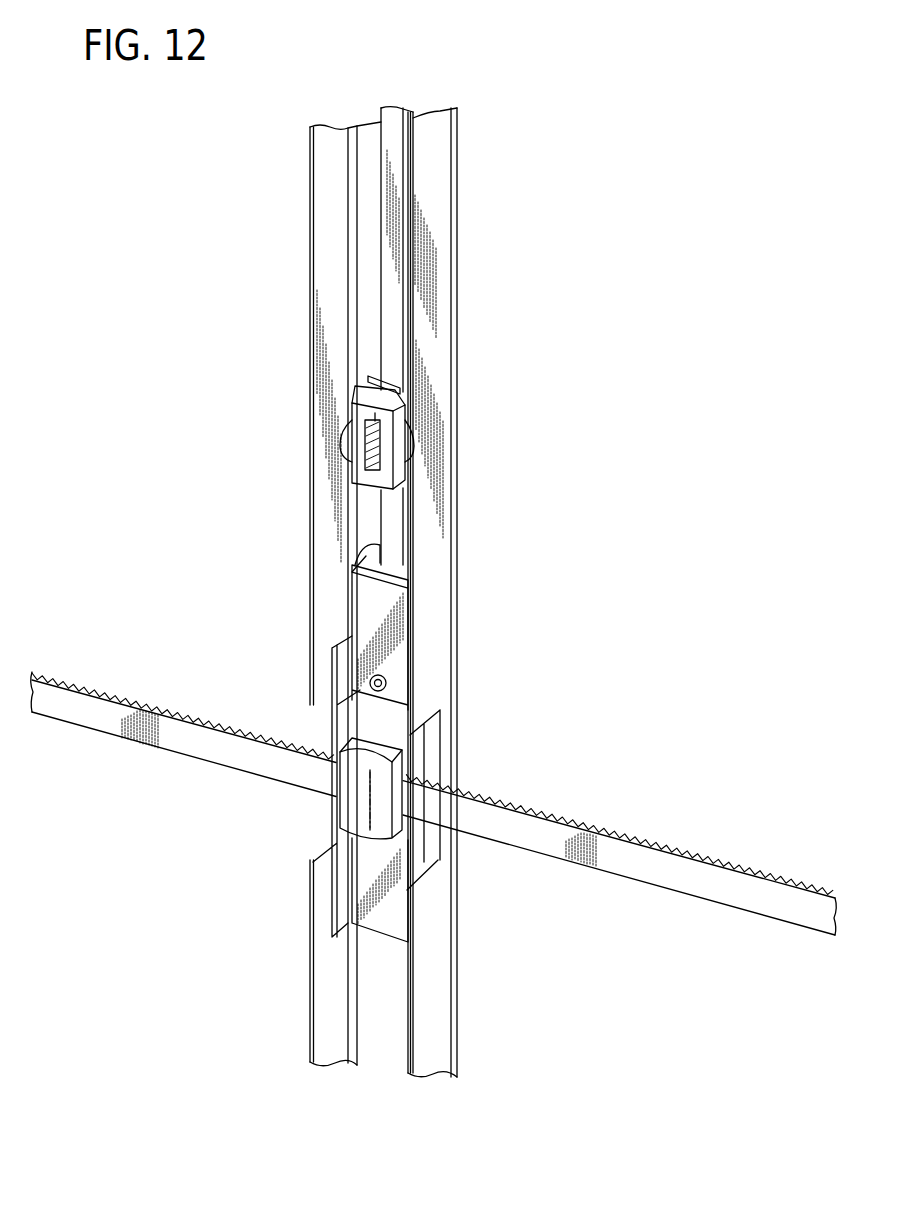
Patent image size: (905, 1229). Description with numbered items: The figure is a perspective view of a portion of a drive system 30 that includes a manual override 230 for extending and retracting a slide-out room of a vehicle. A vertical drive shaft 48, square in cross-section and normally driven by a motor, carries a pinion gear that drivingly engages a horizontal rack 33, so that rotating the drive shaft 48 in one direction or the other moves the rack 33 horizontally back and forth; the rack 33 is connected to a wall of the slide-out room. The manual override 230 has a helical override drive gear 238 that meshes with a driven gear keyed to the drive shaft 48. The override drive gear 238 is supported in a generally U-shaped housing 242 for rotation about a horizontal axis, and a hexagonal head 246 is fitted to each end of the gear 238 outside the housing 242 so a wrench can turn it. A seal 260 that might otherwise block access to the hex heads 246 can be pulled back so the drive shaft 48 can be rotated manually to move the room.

The seal 260 is at (462, 268).
The drive shaft 48 is at (393, 252).
The manual override 230 is at (388, 445).
The override drive gear 238 is at (378, 430).
The hexagonal head 246 is at (345, 434).
The housing 242 is at (387, 468).
The drive system 30 is at (607, 648).
The rack 33 is at (525, 828).